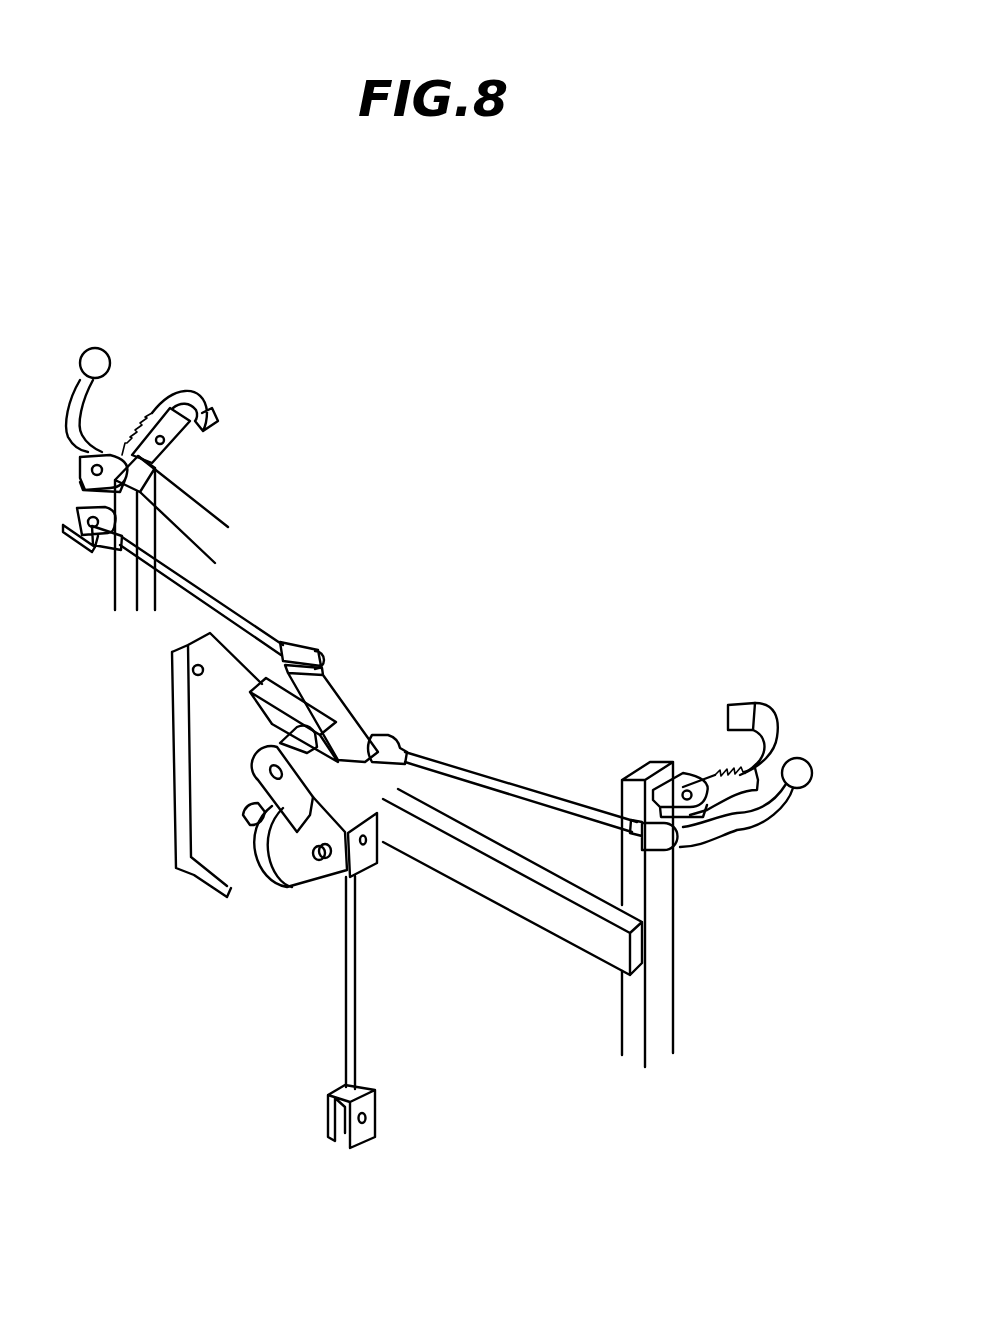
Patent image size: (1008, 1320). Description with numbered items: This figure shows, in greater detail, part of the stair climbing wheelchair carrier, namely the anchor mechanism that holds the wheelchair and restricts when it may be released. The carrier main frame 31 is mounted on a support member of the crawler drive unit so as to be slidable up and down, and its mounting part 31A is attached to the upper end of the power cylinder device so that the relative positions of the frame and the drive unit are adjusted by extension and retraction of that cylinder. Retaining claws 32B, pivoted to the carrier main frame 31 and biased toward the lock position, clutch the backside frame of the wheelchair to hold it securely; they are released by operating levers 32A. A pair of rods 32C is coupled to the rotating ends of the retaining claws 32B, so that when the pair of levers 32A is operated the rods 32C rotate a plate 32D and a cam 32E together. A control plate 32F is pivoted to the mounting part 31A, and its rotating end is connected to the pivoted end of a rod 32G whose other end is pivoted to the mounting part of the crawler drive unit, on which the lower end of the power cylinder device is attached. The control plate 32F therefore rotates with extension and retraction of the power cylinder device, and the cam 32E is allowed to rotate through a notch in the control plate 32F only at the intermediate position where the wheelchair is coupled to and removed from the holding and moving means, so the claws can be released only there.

The carrier main frame 31 is at (203, 517).
The mounting part 31A is at (197, 742).
The operating levers 32A is at (92, 350).
The retaining claws 32B is at (212, 408).
The rods 32C is at (237, 610).
The plate 32D is at (337, 687).
The cam 32E is at (267, 787).
The control plate 32F is at (285, 882).
The rod 32G is at (355, 1027).